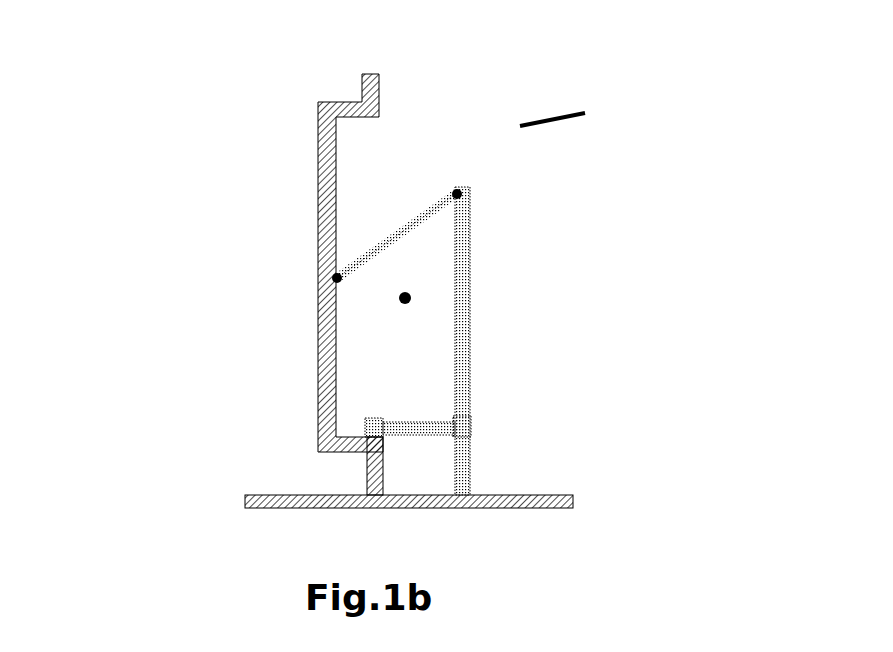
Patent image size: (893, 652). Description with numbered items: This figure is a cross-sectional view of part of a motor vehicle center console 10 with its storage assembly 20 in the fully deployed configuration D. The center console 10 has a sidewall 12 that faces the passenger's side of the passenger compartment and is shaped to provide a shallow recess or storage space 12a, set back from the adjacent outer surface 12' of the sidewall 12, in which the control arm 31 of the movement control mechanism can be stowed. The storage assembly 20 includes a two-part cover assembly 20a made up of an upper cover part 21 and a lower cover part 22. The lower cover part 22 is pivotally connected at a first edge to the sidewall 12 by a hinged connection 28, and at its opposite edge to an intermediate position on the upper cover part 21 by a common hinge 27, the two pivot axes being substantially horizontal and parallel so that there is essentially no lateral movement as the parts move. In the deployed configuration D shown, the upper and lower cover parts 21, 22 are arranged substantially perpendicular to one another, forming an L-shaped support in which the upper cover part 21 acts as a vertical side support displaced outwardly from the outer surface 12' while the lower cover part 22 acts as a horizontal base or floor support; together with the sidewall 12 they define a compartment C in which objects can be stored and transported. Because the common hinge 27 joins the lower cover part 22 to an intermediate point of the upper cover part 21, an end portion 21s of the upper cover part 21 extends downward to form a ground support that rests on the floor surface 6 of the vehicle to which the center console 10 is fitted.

The floor surface 6 is at (283, 495).
The center console 10 is at (316, 215).
The sidewall 12 is at (398, 466).
The outer surface 12' is at (426, 84).
The storage space 12a is at (318, 256).
The storage assembly 20 is at (508, 128).
The deployed configuration D is at (552, 119).
The two-part cover assembly 20a is at (472, 339).
The upper cover part 21 is at (466, 278).
The end portion 21s is at (467, 472).
The lower cover part 22 is at (415, 422).
The common hinge 27 is at (469, 420).
The hinged connection 28 is at (365, 418).
The control arm 31 is at (388, 240).
The compartment C is at (405, 298).